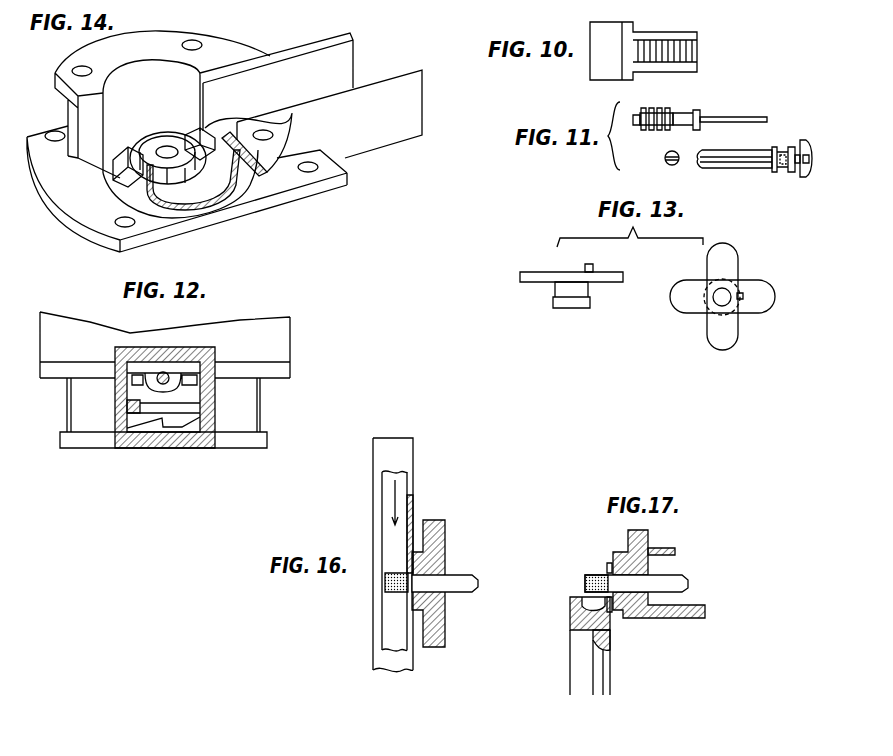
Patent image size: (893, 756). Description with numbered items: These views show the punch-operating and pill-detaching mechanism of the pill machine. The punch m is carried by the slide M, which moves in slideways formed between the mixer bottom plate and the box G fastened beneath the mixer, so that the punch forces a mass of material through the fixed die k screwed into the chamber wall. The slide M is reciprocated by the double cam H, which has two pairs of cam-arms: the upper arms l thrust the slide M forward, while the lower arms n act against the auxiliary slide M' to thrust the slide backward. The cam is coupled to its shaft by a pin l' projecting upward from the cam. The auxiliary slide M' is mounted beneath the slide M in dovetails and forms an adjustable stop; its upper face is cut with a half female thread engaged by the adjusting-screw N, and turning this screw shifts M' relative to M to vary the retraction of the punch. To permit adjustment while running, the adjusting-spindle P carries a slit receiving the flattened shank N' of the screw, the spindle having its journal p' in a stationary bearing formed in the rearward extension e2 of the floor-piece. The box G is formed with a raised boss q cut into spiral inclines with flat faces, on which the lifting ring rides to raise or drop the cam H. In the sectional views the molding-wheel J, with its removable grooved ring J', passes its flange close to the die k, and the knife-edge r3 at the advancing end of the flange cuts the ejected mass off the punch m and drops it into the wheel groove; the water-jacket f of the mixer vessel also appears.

In FIG. 10, the auxiliary slide M' is at (643, 43).
In FIG. 12, the auxiliary slide M' is at (163, 399).
In FIG. 11, the adjusting-screw N is at (666, 108).
In FIG. 12, the adjusting-screw N is at (186, 364).
In FIG. 11, the shank of adjusting-screw N' is at (733, 109).
In FIG. 11, the adjusting-spindle P is at (770, 170).
In FIG. 11, the journal of spindle p' is at (786, 175).
In FIG. 13, the double cam H is at (647, 296).
In FIG. 13, the upper cam-arms l is at (642, 281).
In FIG. 12, the upper cam-arms l is at (174, 423).
In FIG. 13, the driving-pin of cam l' is at (674, 273).
In FIG. 12, the driving-pin of cam l' is at (111, 404).
In FIG. 13, the lower cam-arms n is at (575, 308).
In FIG. 12, the punch-carrying slide M is at (148, 392).
In FIG. 12, the rearward extension of floor-piece e2 is at (192, 337).
In FIG. 14, the box G is at (329, 114).
In FIG. 12, the box G is at (165, 380).
In FIG. 14, the raised boss q is at (200, 143).
In FIG. 12, the raised boss q is at (185, 438).
In FIG. 16, the molding-wheel J is at (380, 555).
In FIG. 16, the die k is at (413, 555).
In FIG. 17, the die k is at (613, 556).
In FIG. 16, the punch m is at (445, 575).
In FIG. 17, the punch m is at (636, 584).
In FIG. 16, the knife-edge r3 is at (409, 573).
In FIG. 17, the water-jacket f is at (661, 544).
In FIG. 17, the removable ring J' is at (576, 645).